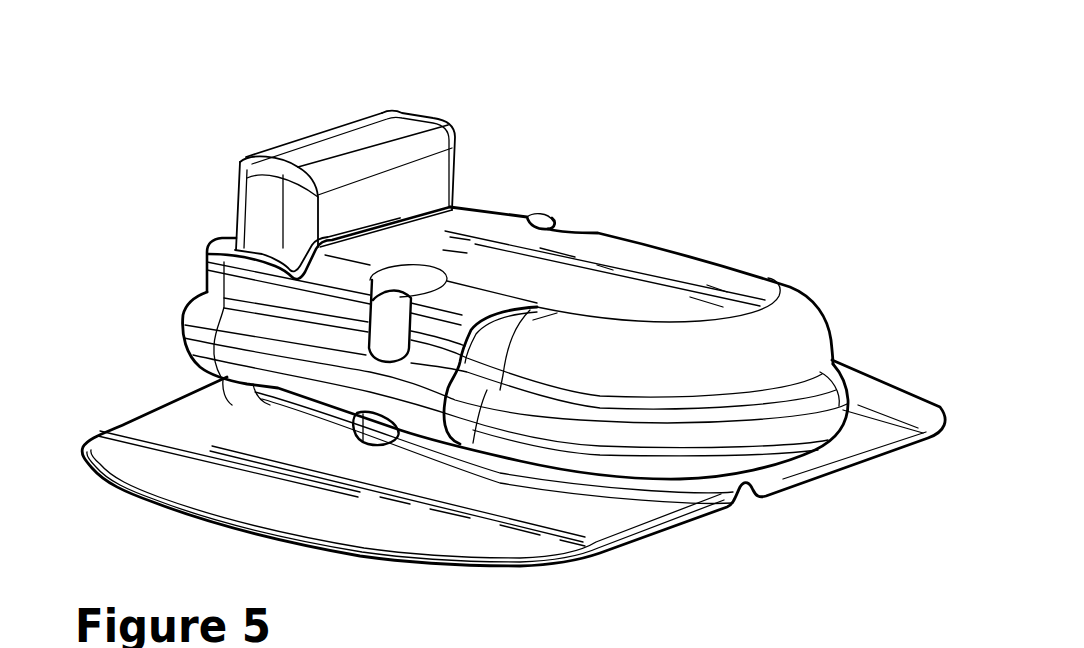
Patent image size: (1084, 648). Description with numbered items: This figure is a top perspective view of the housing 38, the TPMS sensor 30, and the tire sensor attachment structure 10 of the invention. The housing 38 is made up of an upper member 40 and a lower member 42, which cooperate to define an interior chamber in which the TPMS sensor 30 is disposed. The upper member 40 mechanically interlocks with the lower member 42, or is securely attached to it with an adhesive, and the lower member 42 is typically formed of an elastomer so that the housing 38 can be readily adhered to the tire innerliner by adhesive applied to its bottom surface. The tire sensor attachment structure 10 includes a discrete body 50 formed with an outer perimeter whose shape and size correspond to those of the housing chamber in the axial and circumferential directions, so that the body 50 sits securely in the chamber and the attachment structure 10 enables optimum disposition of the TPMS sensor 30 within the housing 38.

The tire sensor attachment structure 10 is at (679, 550).
The TPMS sensor 30 is at (233, 157).
The housing 38 is at (808, 281).
The upper member 40 is at (648, 244).
The lower member 42 is at (157, 406).
The body 50 is at (389, 347).